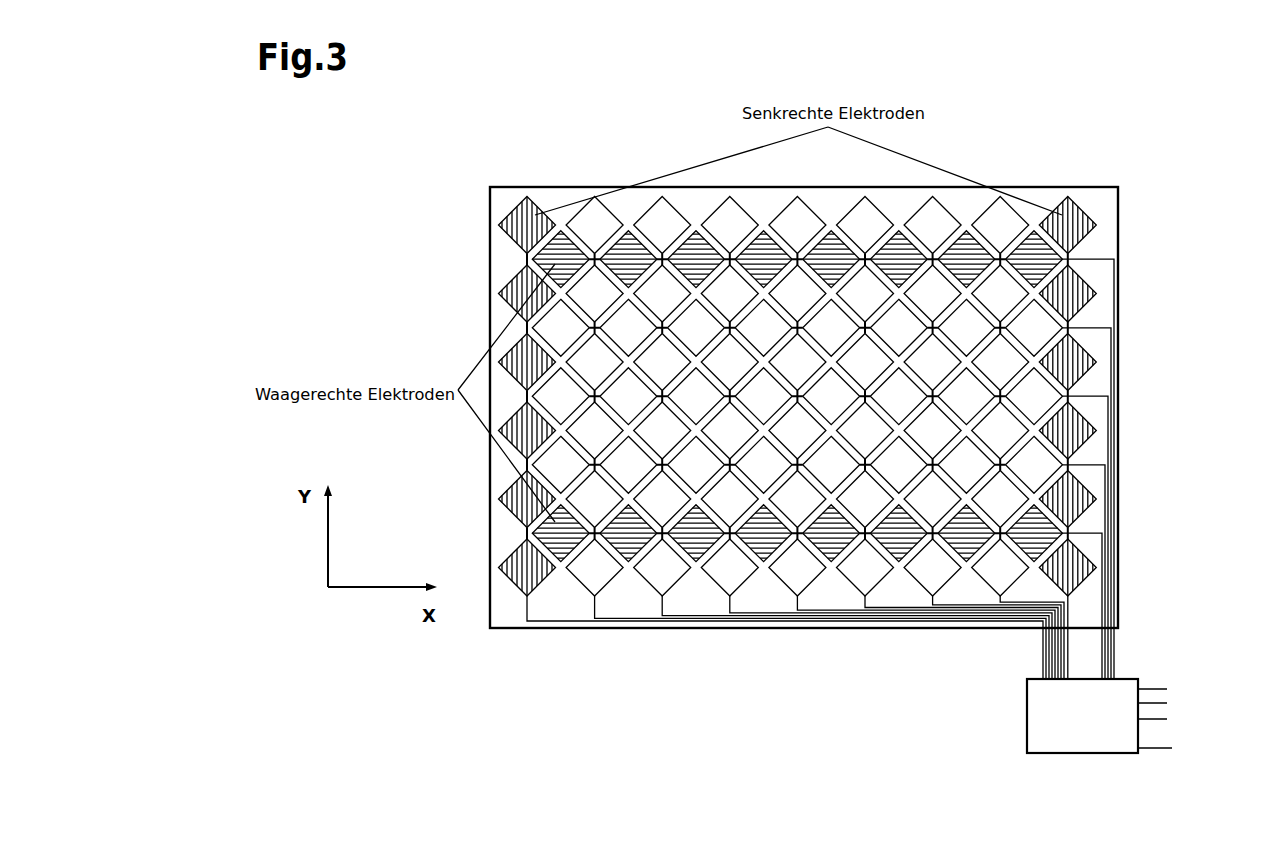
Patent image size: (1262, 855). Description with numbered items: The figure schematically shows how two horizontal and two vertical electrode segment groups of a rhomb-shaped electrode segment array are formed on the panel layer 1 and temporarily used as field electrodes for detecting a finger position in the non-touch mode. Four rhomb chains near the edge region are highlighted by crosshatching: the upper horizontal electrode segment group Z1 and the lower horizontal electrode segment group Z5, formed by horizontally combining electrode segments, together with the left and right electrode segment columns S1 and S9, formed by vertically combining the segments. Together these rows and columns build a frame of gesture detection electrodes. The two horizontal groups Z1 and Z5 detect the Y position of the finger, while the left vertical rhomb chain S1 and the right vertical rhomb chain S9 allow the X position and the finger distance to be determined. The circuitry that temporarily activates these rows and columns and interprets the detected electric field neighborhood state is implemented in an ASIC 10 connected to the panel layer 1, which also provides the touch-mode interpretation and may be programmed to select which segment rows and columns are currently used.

The panel layer 1 is at (1100, 197).
The ASIC 10 is at (1127, 715).
The electrode segment column S1 is at (771, 444).
The electrode segment column S9 is at (1067, 438).
The horizontal electrode segment group Z1 is at (849, 454).
The horizontal electrode segment group Z5 is at (849, 591).